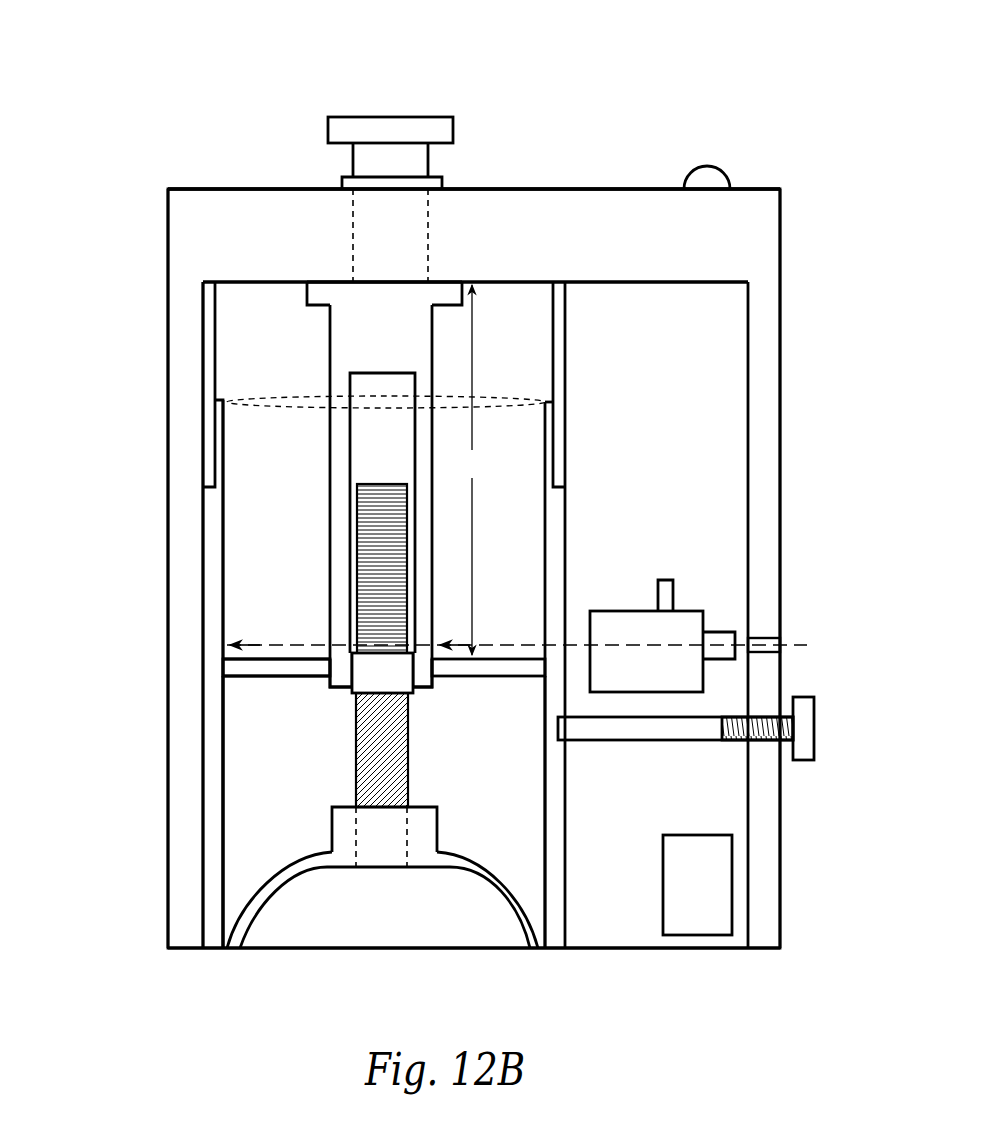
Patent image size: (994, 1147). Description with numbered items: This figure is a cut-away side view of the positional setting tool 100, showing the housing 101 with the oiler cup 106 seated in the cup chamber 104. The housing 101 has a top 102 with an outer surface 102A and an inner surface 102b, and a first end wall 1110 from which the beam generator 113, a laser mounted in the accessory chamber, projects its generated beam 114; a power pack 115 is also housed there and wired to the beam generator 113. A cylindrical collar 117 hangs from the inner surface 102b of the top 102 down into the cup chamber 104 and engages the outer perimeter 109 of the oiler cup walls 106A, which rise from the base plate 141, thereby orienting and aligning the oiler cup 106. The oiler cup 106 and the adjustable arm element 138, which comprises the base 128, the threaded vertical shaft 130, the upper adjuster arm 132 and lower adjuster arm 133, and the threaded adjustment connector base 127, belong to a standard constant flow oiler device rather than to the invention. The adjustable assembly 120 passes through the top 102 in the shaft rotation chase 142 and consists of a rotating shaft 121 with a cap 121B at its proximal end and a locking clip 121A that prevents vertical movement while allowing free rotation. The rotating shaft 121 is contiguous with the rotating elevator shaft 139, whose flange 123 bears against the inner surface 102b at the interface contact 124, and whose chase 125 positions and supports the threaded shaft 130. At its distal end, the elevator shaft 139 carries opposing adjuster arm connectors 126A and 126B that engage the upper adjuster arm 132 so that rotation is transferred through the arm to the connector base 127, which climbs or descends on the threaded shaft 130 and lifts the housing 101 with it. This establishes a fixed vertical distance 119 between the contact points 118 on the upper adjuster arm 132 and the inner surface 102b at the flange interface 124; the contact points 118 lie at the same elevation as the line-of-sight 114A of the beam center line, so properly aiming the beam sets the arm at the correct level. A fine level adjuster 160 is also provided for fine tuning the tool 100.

The positional setting tool 100 is at (515, 128).
The housing 101 is at (120, 275).
The top 102 is at (182, 213).
The outer surface of the top 102A is at (553, 189).
The inner surface of the top 102b is at (628, 283).
The cup chamber 104 is at (520, 863).
The oiler cup 106 is at (240, 593).
The oiler cup walls 106A is at (215, 527).
The outer perimeter of the oiler cup 109 is at (210, 280).
The beam generator 113 is at (690, 617).
The generated beam 114 is at (793, 642).
The line-of-sight of the beam center line 114A is at (580, 645).
The power pack 115 is at (703, 905).
The cylindrical collar 117 is at (207, 424).
The contact points 118 is at (245, 660).
The fixed vertical distance 119 is at (476, 470).
The adjustable assembly 120 is at (340, 112).
The rotating shaft 121 is at (352, 162).
The locking clip 121A is at (345, 183).
The cap 121B is at (372, 128).
The flange 123 is at (318, 305).
The interface contact 124 is at (307, 296).
The chase 125 is at (375, 443).
The first adjuster arm connector 126A is at (340, 690).
The second adjuster arm connector 126B is at (425, 690).
The adjustment connector base 127 is at (375, 680).
The adjuster arm base 128 is at (257, 880).
The threaded vertical shaft 130 is at (357, 577).
The upper adjuster arm 132 is at (260, 663).
The lower adjuster arm 133 is at (250, 673).
The adjustable arm element 138 is at (258, 824).
The rotating elevator shaft 139 is at (330, 330).
The base plate 141 is at (203, 960).
The shaft rotation chase 142 is at (400, 212).
The fine level adjuster 160 is at (735, 743).
The first end wall 1110 is at (782, 395).